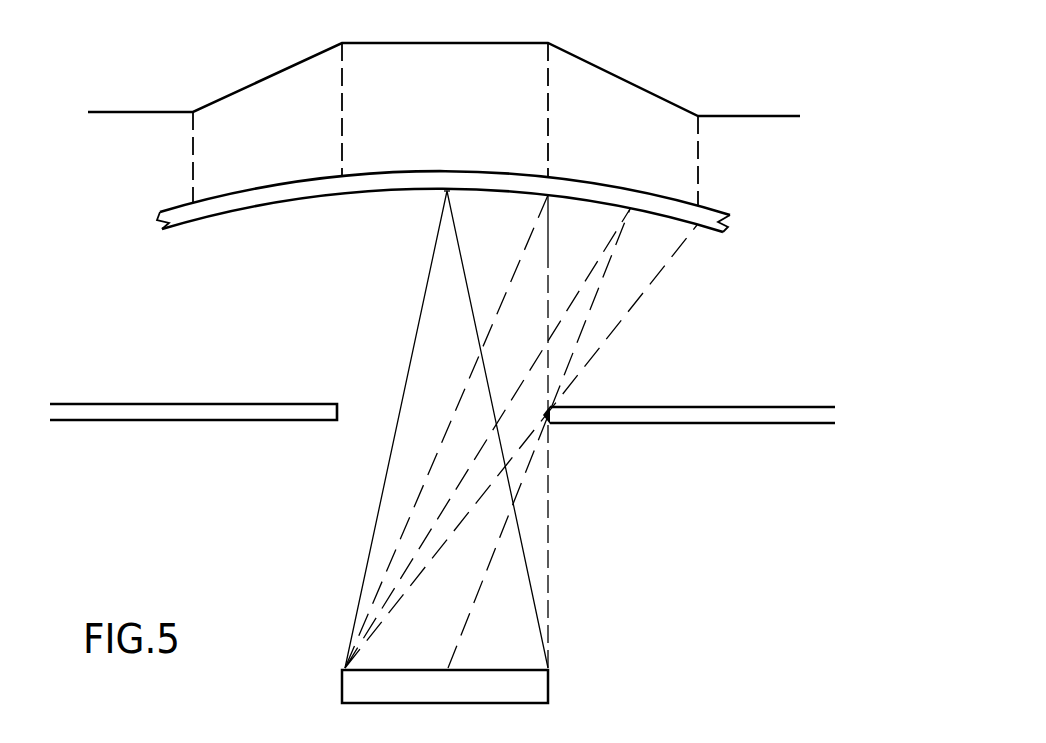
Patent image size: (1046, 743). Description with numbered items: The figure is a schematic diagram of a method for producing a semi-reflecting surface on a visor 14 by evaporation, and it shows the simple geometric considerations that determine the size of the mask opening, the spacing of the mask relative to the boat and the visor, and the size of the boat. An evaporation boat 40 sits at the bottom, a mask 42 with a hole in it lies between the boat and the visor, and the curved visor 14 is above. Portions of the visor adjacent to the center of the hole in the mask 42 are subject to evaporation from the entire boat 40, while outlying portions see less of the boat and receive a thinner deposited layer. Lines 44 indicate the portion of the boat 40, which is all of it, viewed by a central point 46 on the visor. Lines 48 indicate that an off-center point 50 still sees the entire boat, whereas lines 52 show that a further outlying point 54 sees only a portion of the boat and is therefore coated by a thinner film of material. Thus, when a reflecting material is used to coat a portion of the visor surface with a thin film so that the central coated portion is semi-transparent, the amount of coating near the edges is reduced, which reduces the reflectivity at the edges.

The visor 14 is at (715, 212).
The boat 40 is at (548, 693).
The mask 42 is at (773, 407).
The lines 44 is at (462, 270).
The point 46 is at (447, 192).
The lines 48 is at (548, 273).
The off-center point 50 is at (551, 194).
The lines 52 is at (585, 325).
The point 54 is at (640, 210).